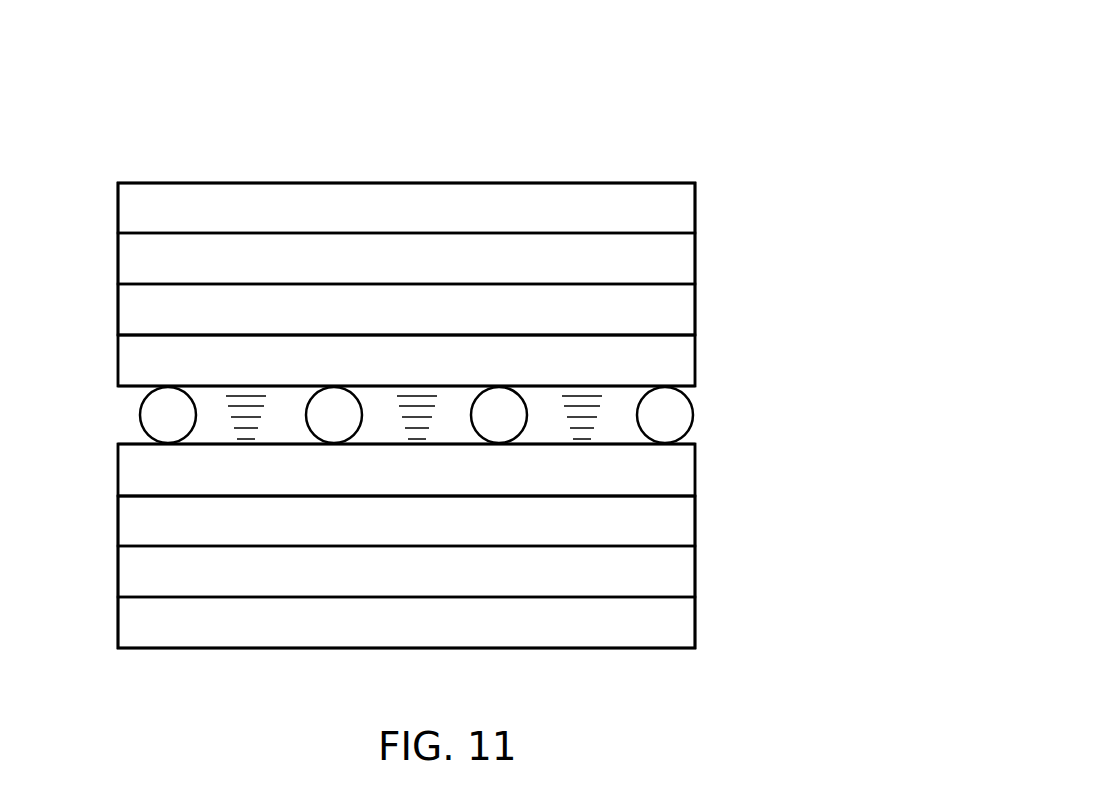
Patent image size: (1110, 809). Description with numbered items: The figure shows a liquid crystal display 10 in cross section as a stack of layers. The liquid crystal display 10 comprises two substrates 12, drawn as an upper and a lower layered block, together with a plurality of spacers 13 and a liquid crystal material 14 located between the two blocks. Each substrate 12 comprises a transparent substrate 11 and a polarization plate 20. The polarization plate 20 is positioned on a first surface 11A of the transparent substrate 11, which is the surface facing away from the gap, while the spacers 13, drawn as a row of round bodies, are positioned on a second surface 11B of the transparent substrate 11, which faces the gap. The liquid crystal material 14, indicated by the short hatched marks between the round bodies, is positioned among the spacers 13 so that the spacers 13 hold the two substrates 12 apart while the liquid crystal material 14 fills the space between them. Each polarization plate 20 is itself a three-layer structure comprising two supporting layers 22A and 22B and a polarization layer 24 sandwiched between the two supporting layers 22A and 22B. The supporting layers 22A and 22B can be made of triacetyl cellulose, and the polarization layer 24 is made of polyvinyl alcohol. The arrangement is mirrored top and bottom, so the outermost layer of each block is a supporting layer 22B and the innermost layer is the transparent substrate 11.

The liquid crystal display 10 is at (703, 68).
The transparent substrate 11 is at (683, 367).
The first surface 11A is at (130, 335).
The second surface 11B is at (128, 387).
The substrate 12 is at (832, 218).
The spacer 13 is at (683, 415).
The liquid crystal material 14 is at (233, 425).
The polarization plate 20 is at (768, 163).
The supporting layer 22A is at (683, 305).
The supporting layer 22B is at (683, 196).
The polarization layer 24 is at (683, 257).